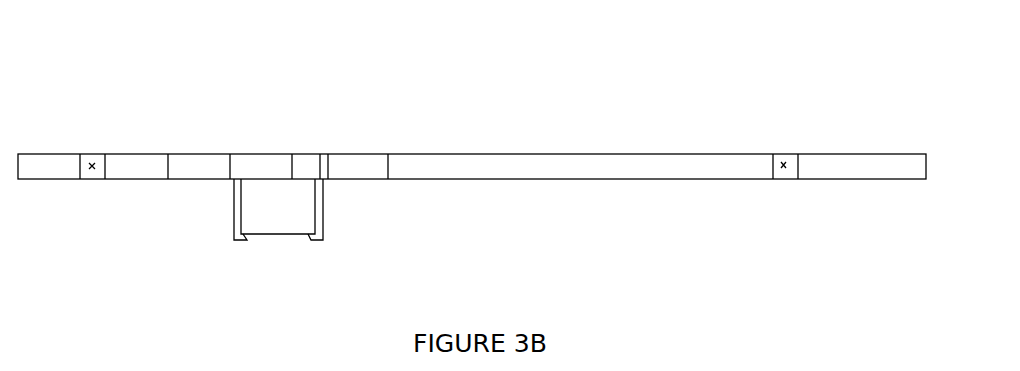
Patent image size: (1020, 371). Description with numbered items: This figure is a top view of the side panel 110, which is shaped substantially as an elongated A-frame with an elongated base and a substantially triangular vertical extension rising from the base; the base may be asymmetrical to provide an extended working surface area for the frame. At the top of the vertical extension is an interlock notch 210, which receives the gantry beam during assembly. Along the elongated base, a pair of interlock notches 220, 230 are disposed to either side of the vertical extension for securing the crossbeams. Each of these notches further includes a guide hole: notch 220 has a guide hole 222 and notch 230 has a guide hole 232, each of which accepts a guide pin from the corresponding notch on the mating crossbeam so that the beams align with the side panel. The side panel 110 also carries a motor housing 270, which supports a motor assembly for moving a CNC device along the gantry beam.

The side panel 110 is at (140, 164).
The interlock notch 220 is at (86, 160).
The guide hole 222 is at (92, 165).
The interlock notch 210 is at (312, 160).
The motor housing 270 is at (297, 212).
The interlock notch 230 is at (790, 160).
The guide hole 232 is at (783, 167).